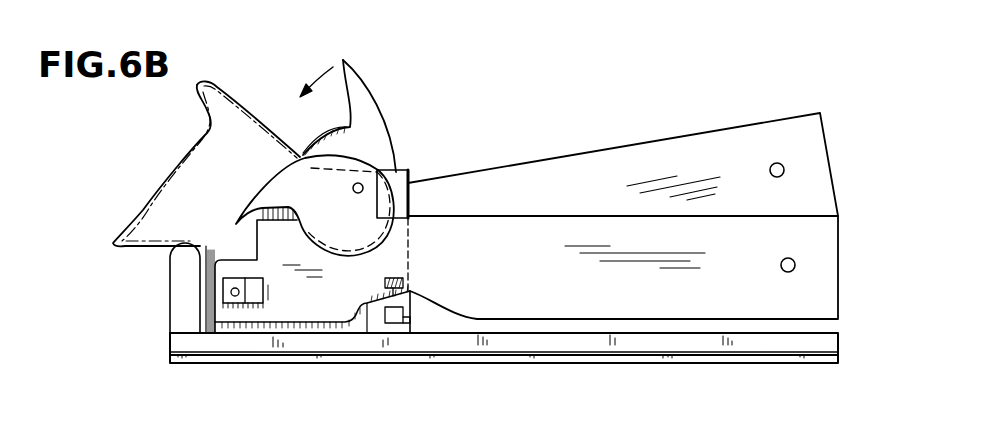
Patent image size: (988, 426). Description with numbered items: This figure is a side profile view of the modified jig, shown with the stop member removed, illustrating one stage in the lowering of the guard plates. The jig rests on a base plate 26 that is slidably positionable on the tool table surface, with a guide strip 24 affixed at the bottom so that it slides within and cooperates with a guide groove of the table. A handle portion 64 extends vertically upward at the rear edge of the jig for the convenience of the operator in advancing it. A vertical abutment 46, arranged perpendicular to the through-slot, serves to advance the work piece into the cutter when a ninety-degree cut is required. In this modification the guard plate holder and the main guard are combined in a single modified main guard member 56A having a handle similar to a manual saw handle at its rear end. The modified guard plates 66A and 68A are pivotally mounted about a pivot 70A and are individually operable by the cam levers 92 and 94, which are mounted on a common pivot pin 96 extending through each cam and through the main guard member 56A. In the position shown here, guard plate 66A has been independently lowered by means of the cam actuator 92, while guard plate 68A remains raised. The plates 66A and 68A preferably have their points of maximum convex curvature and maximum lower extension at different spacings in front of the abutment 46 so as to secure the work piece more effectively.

The guide strip 24 is at (699, 358).
The base plate 26 is at (500, 350).
The vertical abutment 46 is at (412, 292).
The modified main guard member 56A is at (233, 108).
The handle portion 64 is at (180, 267).
The modified guard plate 66A is at (817, 283).
The modified guard plate 68A is at (742, 142).
The pivot 70A is at (227, 292).
The cam lever 92 is at (275, 187).
The cam lever 94 is at (375, 110).
The pivot pin 96 is at (363, 184).